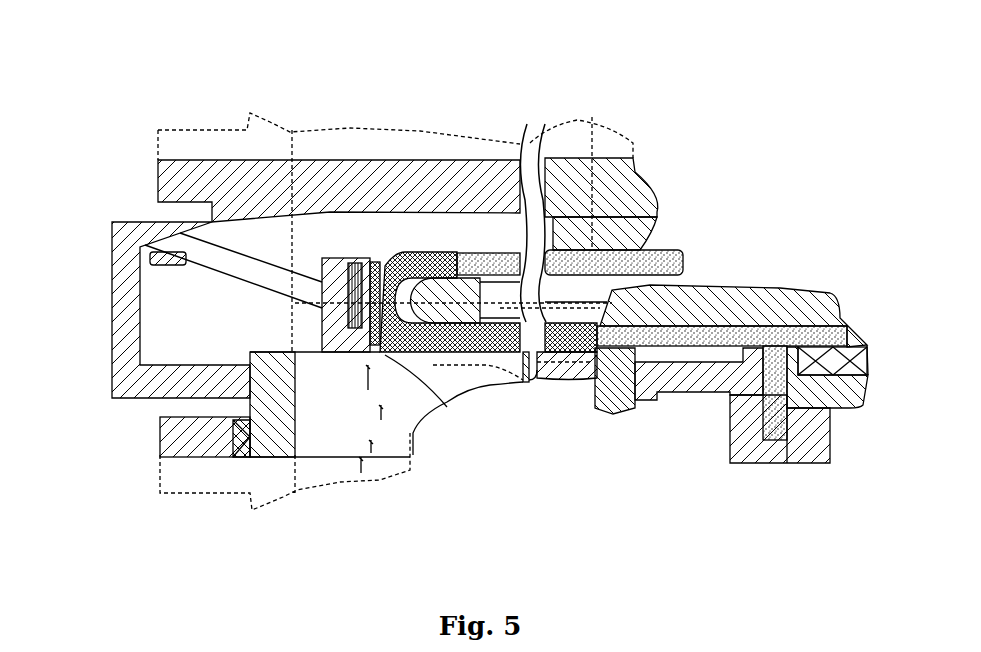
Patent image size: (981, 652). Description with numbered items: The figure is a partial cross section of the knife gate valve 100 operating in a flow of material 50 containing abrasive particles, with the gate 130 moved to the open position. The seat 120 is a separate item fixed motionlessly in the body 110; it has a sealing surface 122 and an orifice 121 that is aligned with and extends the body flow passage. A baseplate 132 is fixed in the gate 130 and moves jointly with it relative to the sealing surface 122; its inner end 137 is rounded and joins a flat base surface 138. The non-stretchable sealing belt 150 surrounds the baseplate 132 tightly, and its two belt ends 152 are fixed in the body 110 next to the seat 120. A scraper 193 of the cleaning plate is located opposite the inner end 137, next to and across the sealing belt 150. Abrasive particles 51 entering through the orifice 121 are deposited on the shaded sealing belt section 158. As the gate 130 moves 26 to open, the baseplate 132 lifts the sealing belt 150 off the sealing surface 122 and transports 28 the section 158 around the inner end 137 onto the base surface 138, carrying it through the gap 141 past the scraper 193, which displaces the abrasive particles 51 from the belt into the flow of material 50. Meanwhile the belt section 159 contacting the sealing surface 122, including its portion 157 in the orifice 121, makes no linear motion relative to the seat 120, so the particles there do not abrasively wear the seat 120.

The movement to the open position 26 is at (657, 313).
The transport of the sealing belt section 28 is at (665, 250).
The flow of material 50 is at (318, 95).
The abrasive particles 51 is at (507, 388).
The knife gate valve 100 is at (520, 95).
The body 110 is at (727, 465).
The seat 120 is at (237, 447).
The orifice 121 is at (302, 413).
The sealing surface 122 is at (262, 352).
The gate 130 is at (322, 332).
The baseplate 132 is at (797, 307).
The inner end 137 is at (340, 295).
The base surface 138 is at (487, 283).
The gap 141 is at (350, 298).
The sealing belt 150 is at (658, 248).
The belt ends 152 is at (858, 410).
The portion of the sealing belt section 157 is at (628, 414).
The sealing belt section 158 is at (458, 253).
The sealing belt section 159 is at (690, 300).
The scraper 193 is at (383, 280).